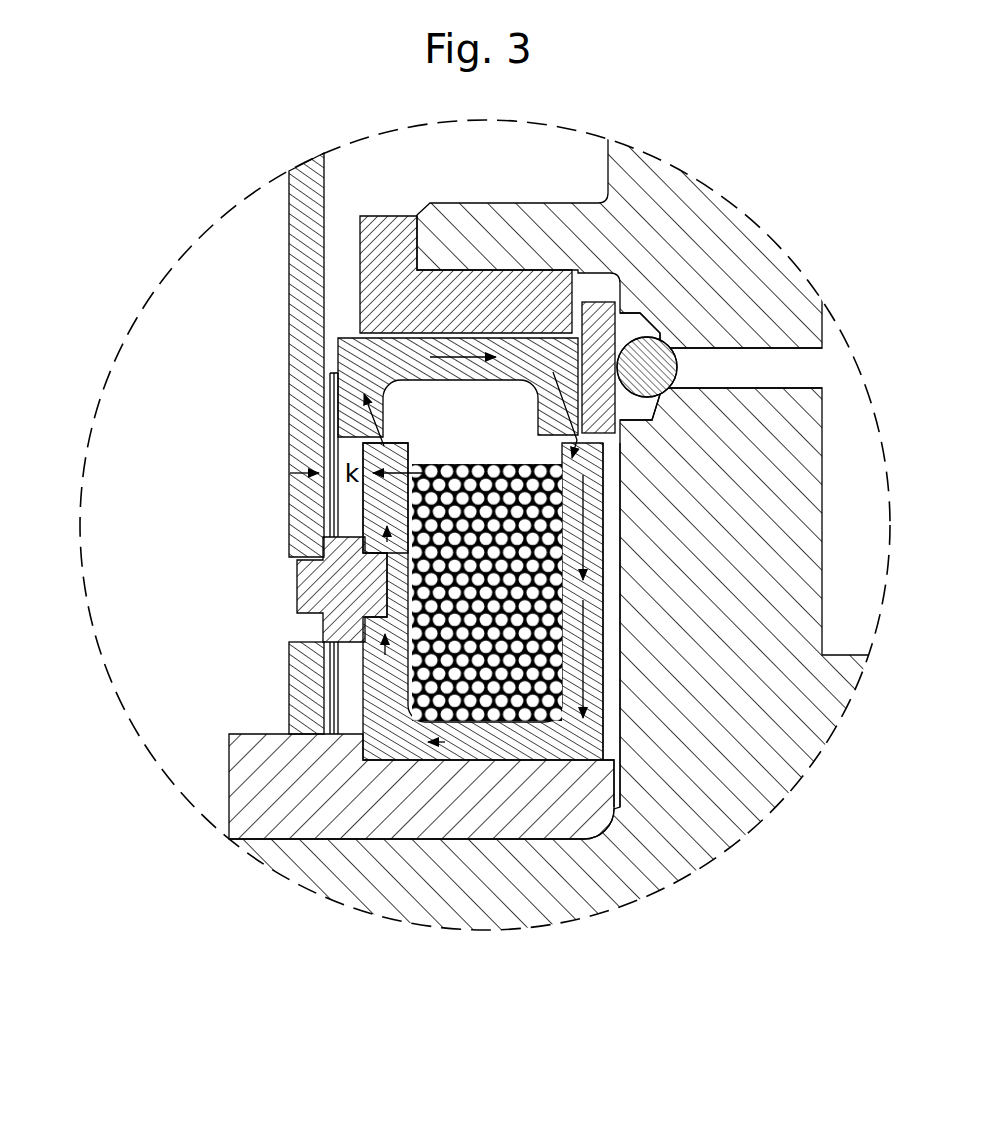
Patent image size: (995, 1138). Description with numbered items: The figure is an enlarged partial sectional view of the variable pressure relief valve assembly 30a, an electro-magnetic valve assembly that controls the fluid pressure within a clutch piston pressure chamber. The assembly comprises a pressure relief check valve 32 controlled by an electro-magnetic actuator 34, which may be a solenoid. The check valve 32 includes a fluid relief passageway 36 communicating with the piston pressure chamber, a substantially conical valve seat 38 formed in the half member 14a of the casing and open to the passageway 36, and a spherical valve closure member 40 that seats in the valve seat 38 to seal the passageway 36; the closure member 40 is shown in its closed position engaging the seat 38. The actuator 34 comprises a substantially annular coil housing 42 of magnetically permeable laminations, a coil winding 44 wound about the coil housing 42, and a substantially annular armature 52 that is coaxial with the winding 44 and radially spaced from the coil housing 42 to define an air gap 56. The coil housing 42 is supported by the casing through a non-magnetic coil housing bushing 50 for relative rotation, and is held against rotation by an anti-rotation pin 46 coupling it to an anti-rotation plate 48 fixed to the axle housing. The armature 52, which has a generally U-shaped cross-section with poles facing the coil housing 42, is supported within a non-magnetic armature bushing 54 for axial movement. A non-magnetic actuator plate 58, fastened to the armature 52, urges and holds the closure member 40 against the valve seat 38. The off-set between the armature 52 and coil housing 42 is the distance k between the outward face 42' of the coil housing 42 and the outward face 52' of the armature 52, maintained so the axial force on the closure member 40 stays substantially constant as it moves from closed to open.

The half member of the casing 14a is at (362, 890).
The variable pressure relief valve assembly 30a is at (100, 686).
The pressure relief check valve 32 is at (636, 306).
The electro-magnetic actuator 34 is at (618, 733).
The fluid relief passageway 36 is at (808, 370).
The conical valve seat 38 is at (653, 328).
The spherical valve closure member 40 is at (662, 368).
The coil housing 42 is at (615, 601).
The outward face of the coil housing 42' is at (321, 498).
The coil winding 44 is at (512, 480).
The anti-rotation pin 46 is at (305, 590).
The anti-rotation plate 48 is at (292, 253).
The coil housing bushing 50 is at (247, 803).
The armature 52 is at (408, 397).
The outward face of the armature 52' is at (293, 553).
The armature bushing 54 is at (379, 228).
The air gap 56 is at (345, 437).
The actuator plate 58 is at (589, 305).